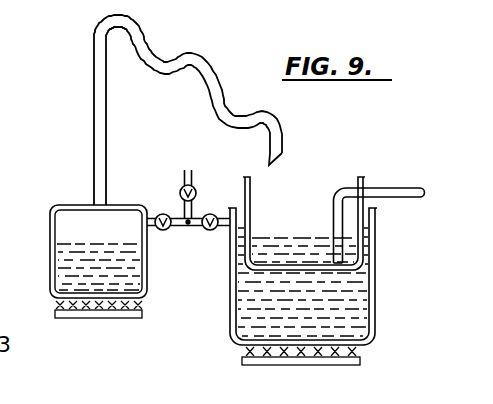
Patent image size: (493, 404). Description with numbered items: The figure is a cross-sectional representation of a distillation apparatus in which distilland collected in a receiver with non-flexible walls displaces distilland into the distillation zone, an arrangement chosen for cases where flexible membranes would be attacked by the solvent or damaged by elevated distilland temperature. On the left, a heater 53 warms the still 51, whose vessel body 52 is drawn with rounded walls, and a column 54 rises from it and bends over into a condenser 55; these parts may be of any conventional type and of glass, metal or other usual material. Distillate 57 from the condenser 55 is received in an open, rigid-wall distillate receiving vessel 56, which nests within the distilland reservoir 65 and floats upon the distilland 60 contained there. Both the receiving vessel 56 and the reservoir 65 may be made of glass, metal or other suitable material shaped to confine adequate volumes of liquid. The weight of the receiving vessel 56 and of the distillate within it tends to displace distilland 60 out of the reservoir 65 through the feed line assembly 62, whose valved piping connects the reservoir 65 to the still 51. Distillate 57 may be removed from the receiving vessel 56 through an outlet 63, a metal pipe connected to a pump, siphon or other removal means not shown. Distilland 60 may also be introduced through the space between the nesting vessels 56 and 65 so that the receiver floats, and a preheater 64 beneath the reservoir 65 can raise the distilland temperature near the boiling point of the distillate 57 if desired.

The still 51 is at (143, 286).
The vessel 52 is at (50, 223).
The heater 53 is at (82, 318).
The column 54 is at (94, 122).
The condenser 55 is at (219, 93).
The distillate receiving vessel 56 is at (317, 196).
The distillate 57 is at (298, 240).
The distilland 60 is at (263, 310).
The feed line assembly 62 is at (190, 224).
The outlet 63 is at (398, 188).
The preheater 64 is at (340, 361).
The distilland reservoir 65 is at (368, 325).